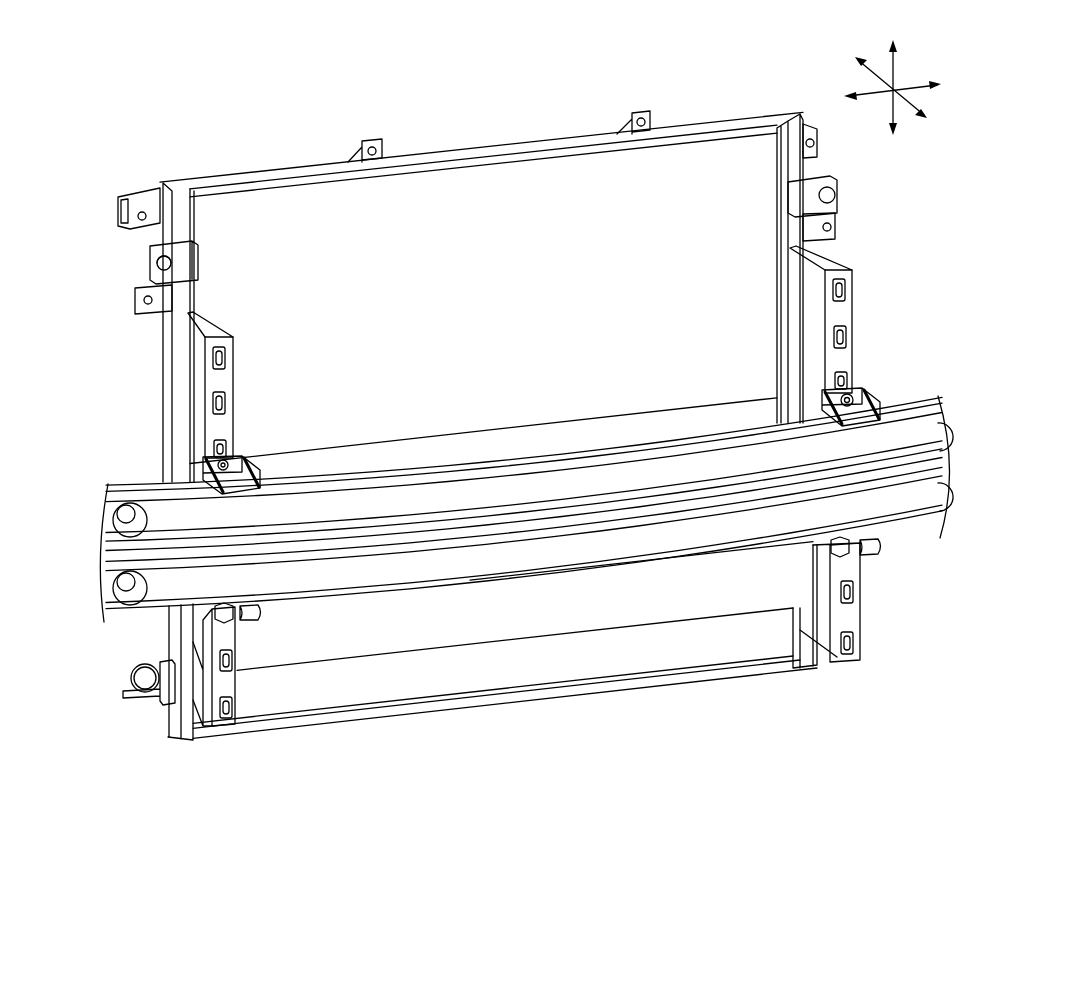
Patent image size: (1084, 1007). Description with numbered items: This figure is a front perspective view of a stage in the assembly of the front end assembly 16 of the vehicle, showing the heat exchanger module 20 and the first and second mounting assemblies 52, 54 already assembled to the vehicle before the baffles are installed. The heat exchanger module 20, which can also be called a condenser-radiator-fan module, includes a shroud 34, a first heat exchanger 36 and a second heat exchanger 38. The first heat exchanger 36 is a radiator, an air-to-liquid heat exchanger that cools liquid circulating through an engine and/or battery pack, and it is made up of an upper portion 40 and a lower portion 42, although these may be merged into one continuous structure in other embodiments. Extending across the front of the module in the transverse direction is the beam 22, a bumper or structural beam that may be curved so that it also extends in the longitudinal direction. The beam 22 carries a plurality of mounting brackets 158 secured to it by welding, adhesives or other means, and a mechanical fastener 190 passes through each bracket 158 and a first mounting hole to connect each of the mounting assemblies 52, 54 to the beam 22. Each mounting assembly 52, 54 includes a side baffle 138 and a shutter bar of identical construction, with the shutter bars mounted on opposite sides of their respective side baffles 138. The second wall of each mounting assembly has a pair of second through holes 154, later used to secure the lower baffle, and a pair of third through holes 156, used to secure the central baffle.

The front end assembly 16 is at (691, 93).
The heat exchanger module 20 is at (502, 142).
The beam 22 is at (104, 520).
The shroud 34 is at (196, 741).
The first heat exchanger 36 is at (290, 228).
The second heat exchanger 38 is at (659, 608).
The upper portion 40 is at (178, 461).
The lower portion 42 is at (496, 289).
The first mounting assembly 52 is at (852, 313).
The second mounting assembly 54 is at (235, 375).
The side baffle 138 is at (207, 322).
The second through holes 154 is at (233, 706).
The third through holes 156 is at (222, 357).
The mounting brackets 158 is at (262, 465).
The mechanical fastener 190 is at (224, 460).